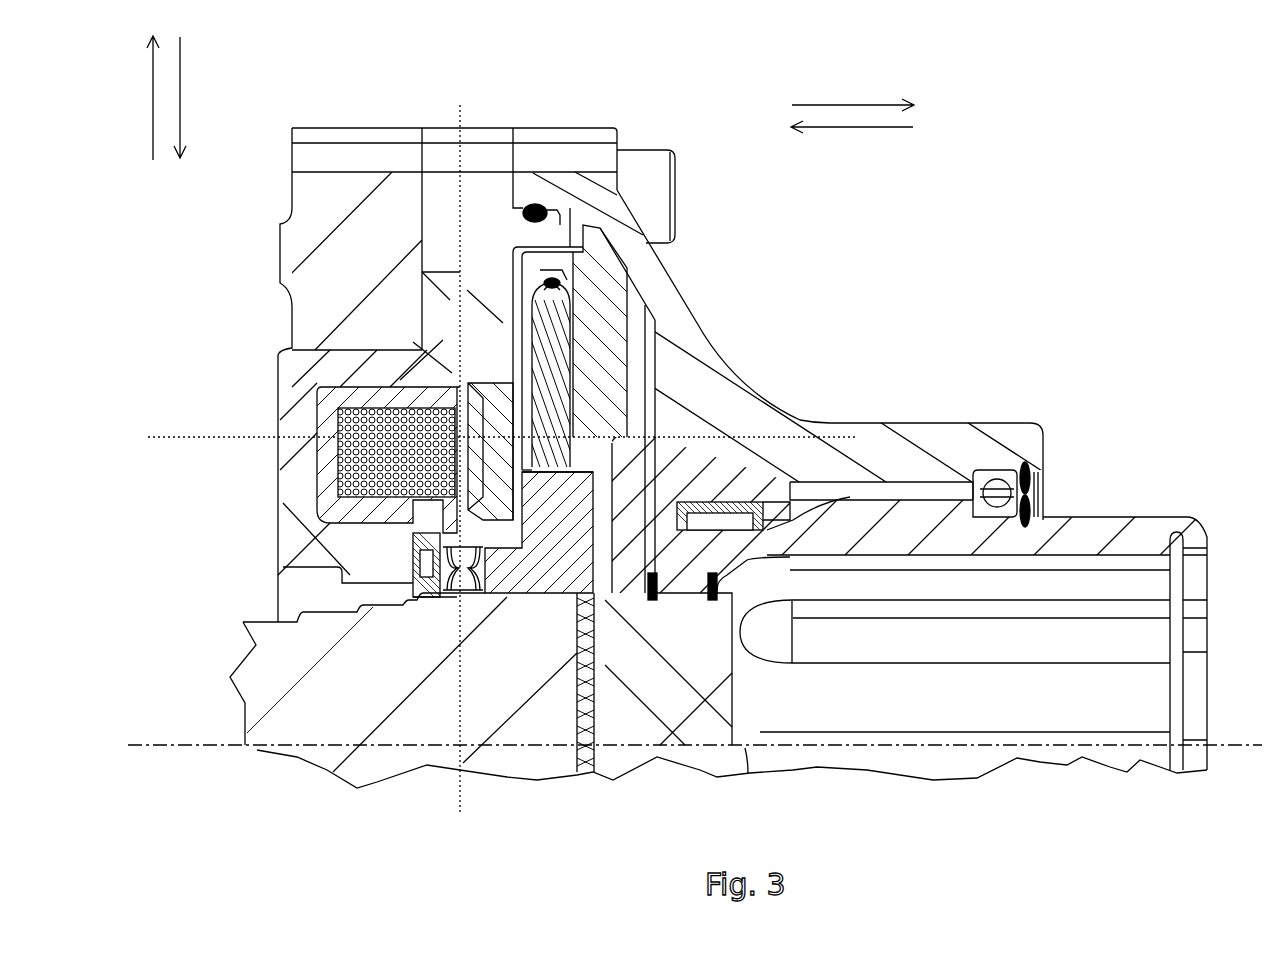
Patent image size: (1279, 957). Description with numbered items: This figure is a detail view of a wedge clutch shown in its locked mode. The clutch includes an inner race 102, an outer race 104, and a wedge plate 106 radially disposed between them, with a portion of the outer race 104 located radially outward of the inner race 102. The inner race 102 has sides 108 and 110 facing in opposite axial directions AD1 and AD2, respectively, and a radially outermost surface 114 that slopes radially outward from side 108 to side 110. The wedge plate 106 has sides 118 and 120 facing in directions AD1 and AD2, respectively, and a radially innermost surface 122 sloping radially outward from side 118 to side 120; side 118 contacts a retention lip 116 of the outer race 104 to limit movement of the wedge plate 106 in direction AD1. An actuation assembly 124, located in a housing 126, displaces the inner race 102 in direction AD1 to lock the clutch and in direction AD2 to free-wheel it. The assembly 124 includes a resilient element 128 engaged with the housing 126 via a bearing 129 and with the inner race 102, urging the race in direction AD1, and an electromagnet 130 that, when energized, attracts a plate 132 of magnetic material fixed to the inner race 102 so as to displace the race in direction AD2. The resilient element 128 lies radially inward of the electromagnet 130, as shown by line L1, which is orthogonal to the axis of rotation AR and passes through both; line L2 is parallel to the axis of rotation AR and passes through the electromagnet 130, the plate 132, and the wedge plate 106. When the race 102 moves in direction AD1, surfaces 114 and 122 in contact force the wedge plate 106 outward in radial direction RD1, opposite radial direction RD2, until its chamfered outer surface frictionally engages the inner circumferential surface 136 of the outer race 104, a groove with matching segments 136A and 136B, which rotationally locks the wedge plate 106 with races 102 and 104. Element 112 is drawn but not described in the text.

The inner race 102 is at (532, 532).
The outer race 104 is at (597, 355).
The wedge plate 106 is at (547, 376).
The side 108 is at (590, 537).
The side 110 is at (520, 487).
The fastening bolt 112 is at (505, 593).
The radially outermost surface 114 is at (590, 457).
The retention lip 116 is at (653, 412).
The side 118 is at (620, 340).
The side 120 is at (530, 312).
The radially innermost surface 122 is at (532, 347).
The actuation assembly 124 is at (348, 556).
The housing 126 is at (552, 280).
The resilient element 128 is at (455, 597).
The bearing 129 is at (415, 597).
The electromagnet 130 is at (337, 490).
The plate 132 is at (488, 459).
The inner circumferential surface 136 is at (562, 284).
The segment 136A is at (547, 283).
The segment 136B is at (562, 282).
The line L1 is at (462, 790).
The line L2 is at (262, 437).
The axis of rotation AR is at (192, 745).
The radial direction RD1 is at (152, 97).
The radial direction RD2 is at (180, 75).
The axial direction AD1 is at (830, 105).
The axial direction AD2 is at (852, 128).